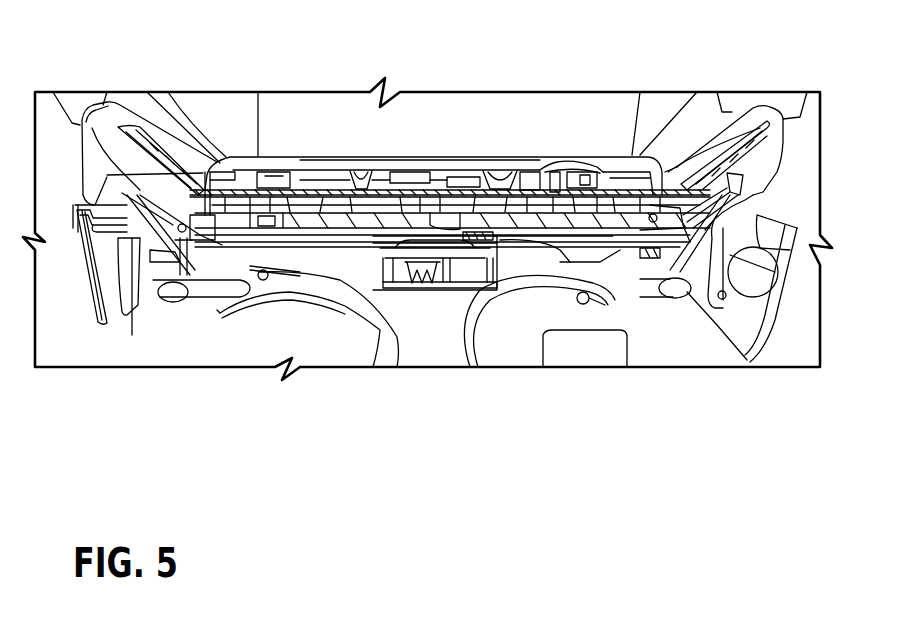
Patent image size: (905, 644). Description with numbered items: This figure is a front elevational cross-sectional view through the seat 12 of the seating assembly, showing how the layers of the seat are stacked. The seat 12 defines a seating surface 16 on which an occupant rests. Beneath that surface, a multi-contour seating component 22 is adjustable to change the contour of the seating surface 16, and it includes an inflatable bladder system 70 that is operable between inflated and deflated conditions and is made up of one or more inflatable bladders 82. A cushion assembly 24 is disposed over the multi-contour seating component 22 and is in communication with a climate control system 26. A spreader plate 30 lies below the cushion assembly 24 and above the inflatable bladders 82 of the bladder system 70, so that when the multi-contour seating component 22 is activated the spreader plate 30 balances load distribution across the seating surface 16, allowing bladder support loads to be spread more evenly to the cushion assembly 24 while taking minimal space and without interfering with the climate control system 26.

The seat 12 is at (227, 155).
The seating surface 16 is at (470, 152).
The multi-contour seating component 22 is at (355, 182).
The cushion assembly 24 is at (323, 165).
The climate control system 26 is at (431, 292).
The spreader plate 30 is at (547, 168).
The inflatable bladder system 70 is at (600, 195).
The inflatable bladders 82 is at (330, 207).